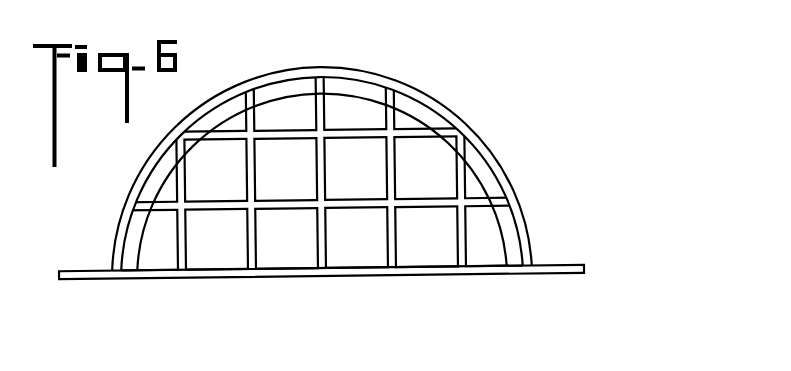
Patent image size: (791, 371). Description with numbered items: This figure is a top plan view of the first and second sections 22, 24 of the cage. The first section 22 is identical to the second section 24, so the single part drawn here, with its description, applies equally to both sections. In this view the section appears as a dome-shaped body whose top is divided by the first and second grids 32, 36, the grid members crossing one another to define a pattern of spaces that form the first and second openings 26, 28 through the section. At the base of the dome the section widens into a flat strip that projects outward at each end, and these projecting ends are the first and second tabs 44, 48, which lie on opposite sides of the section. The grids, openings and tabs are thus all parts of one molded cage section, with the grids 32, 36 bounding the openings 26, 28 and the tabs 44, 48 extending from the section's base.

The first section 22 is at (361, 163).
The second section 24 is at (361, 163).
The first opening 26 is at (489, 168).
The second opening 28 is at (363, 171).
The first grid 32 is at (306, 163).
The second grid 36 is at (250, 201).
The first tab 44 is at (334, 296).
The second tab 48 is at (77, 273).